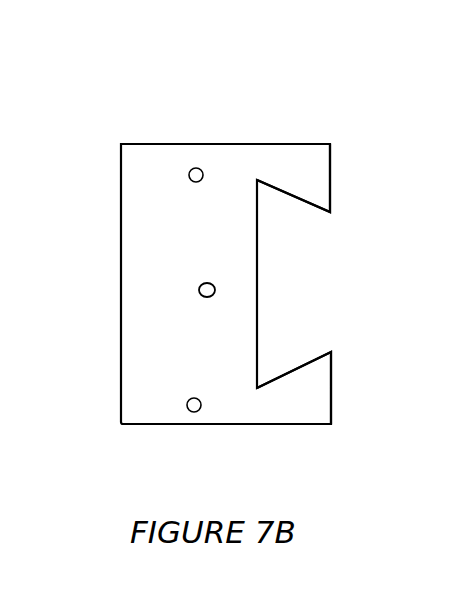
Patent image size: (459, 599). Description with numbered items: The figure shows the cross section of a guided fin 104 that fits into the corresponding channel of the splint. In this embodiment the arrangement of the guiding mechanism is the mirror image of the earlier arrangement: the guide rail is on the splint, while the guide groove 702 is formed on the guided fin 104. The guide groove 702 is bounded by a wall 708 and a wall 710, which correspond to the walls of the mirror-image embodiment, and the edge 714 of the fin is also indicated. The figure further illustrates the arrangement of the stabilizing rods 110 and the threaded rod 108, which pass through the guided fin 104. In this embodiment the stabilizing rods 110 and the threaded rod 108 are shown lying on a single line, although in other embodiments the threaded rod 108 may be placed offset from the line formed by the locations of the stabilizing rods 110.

The guide groove 702 is at (296, 302).
The top edge of bracket 714 is at (136, 143).
The guided fin 104 is at (162, 144).
The wall 708 is at (296, 198).
The wall 710 is at (305, 365).
The threaded rod 108 is at (199, 298).
The stabilizing rods 110 is at (199, 162).